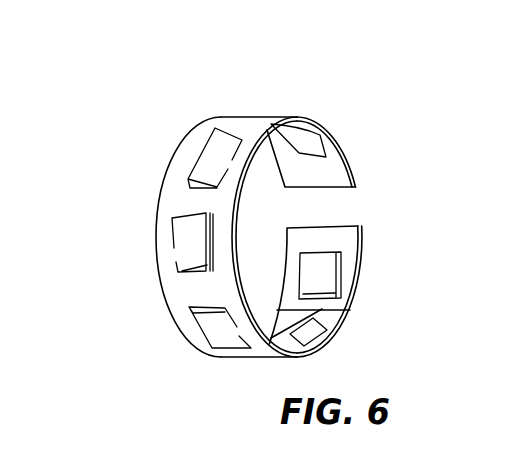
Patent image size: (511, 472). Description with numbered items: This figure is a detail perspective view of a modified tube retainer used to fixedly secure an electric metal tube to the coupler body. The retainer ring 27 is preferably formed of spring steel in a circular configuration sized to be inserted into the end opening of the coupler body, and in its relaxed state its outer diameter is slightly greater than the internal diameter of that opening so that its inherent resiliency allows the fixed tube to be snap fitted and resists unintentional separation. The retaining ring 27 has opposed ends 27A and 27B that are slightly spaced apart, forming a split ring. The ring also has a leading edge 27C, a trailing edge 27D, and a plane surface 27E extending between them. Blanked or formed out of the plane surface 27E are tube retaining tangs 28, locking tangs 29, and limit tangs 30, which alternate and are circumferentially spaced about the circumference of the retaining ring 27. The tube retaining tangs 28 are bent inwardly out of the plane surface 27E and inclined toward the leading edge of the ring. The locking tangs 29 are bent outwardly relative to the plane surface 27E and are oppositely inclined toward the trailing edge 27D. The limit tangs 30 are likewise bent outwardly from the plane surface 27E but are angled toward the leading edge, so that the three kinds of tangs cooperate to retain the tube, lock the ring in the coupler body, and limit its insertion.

The retainer ring 27 is at (264, 114).
The end of retaining ring 27A is at (338, 188).
The end of retaining ring 27B is at (335, 228).
The leading edge 27C is at (348, 313).
The trailing edge 27D is at (184, 319).
The plane surface 27E is at (236, 125).
The tube retaining tang 28 is at (317, 141).
The locking tang 29 is at (206, 162).
The limit tang 30 is at (188, 248).